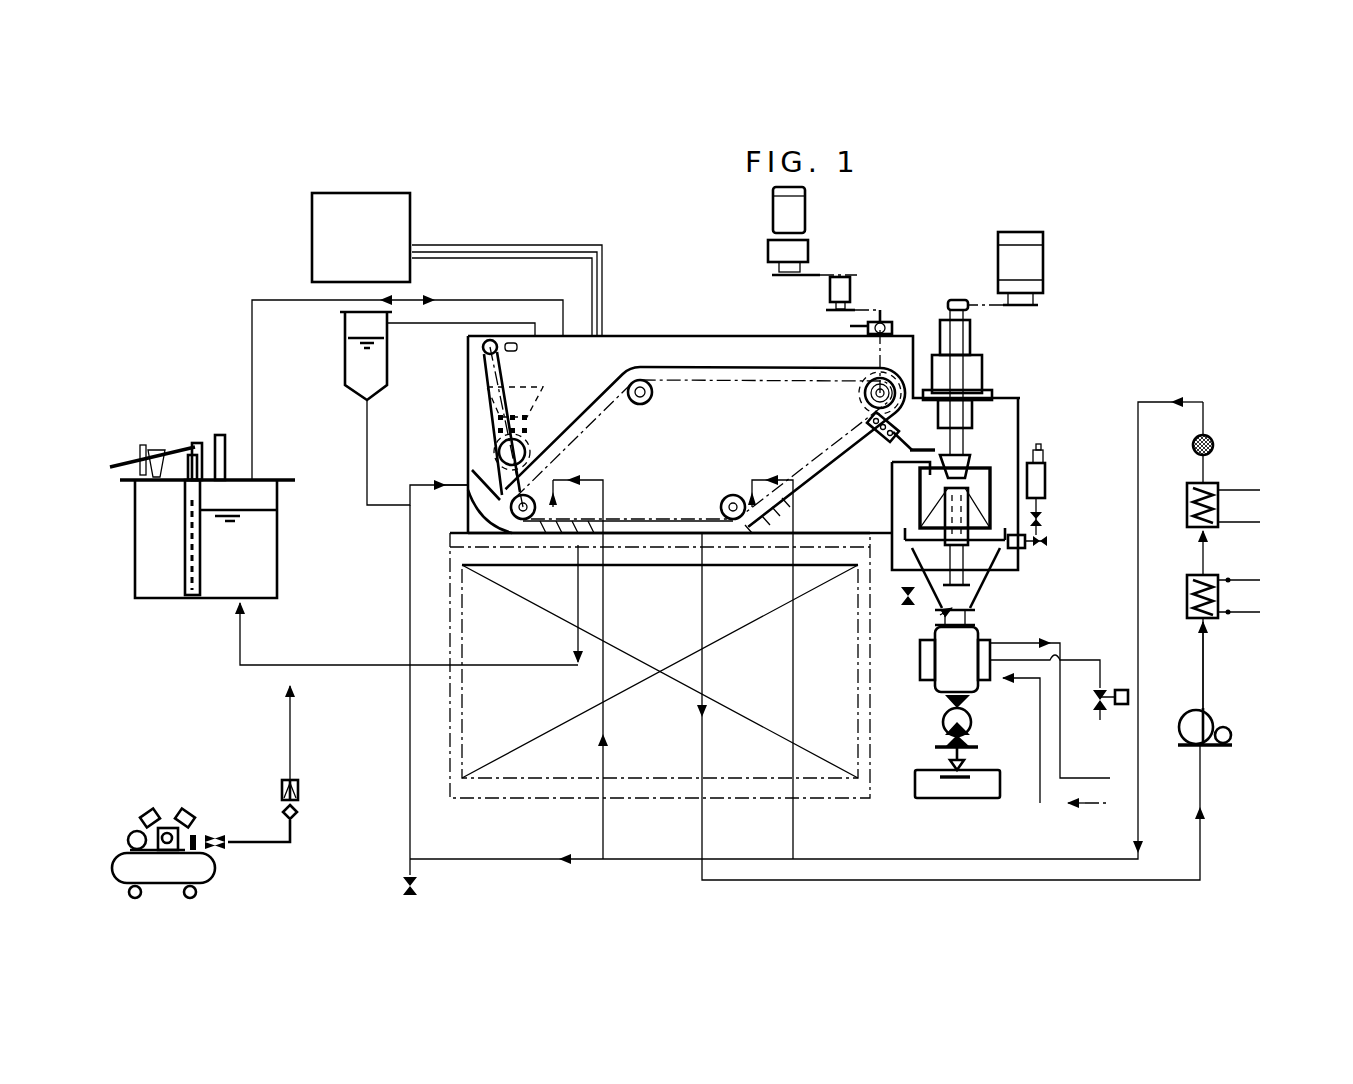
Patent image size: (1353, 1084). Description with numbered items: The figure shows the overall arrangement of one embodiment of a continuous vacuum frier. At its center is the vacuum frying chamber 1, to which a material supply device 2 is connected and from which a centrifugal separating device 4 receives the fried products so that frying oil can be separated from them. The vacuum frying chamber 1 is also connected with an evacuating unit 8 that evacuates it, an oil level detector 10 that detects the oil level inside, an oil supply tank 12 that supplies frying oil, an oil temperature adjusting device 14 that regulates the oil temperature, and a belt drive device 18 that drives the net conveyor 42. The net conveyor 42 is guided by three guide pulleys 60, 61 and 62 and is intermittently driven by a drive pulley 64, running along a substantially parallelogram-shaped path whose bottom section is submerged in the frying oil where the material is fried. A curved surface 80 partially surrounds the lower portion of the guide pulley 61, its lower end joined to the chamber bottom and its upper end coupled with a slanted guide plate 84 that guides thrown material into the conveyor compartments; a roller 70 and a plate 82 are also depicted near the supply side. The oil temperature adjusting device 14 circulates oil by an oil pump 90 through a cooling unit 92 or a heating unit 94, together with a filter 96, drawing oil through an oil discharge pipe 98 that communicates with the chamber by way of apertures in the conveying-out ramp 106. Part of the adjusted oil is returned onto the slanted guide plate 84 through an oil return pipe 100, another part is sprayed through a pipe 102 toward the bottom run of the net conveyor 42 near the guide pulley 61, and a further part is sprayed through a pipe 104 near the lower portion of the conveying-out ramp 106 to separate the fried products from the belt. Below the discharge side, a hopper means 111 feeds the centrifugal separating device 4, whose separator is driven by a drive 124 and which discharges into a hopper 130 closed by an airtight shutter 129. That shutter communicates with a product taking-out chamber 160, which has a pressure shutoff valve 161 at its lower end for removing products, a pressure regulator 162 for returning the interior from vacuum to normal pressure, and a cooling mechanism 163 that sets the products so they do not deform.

The vacuum frying chamber 1 is at (695, 325).
The material supply device 2 is at (462, 397).
The centrifugal separating device 4 is at (1052, 478).
The evacuating unit 8 is at (360, 193).
The oil level detector 10 is at (167, 610).
The oil supply tank 12 is at (395, 368).
The oil temperature adjusting device 14 is at (1232, 667).
The belt drive device 18 is at (825, 243).
The net conveyor 42 is at (745, 365).
The guide pulley 60 is at (640, 378).
The guide pulley 61 is at (535, 498).
The guide pulley 62 is at (740, 497).
The drive pulley 64 is at (865, 396).
The feed roller 70 is at (523, 383).
The curved surface 80 is at (470, 525).
The slanted guide plate 84 is at (470, 492).
The tank top plate 82 is at (658, 535).
The oil pump 90 is at (1208, 757).
The cooling unit 92 is at (1224, 622).
The heating unit 94 is at (1222, 530).
The filter 96 is at (1215, 440).
The oil discharge pipe 98 is at (702, 822).
The oil return pipe 100 is at (410, 730).
The pipe 102 is at (606, 720).
The pipe 104 is at (795, 668).
The conveying-out ramp 106 is at (836, 468).
The hopper means 111 is at (890, 445).
The drive 124 is at (1052, 272).
The airtight shutter 129 is at (975, 620).
The hopper 130 is at (992, 585).
The product taking-out chamber 160 is at (945, 650).
The pressure shutoff valve 161 is at (935, 724).
The pressure regulator 162 is at (1120, 672).
The cooling mechanism 163 is at (920, 670).